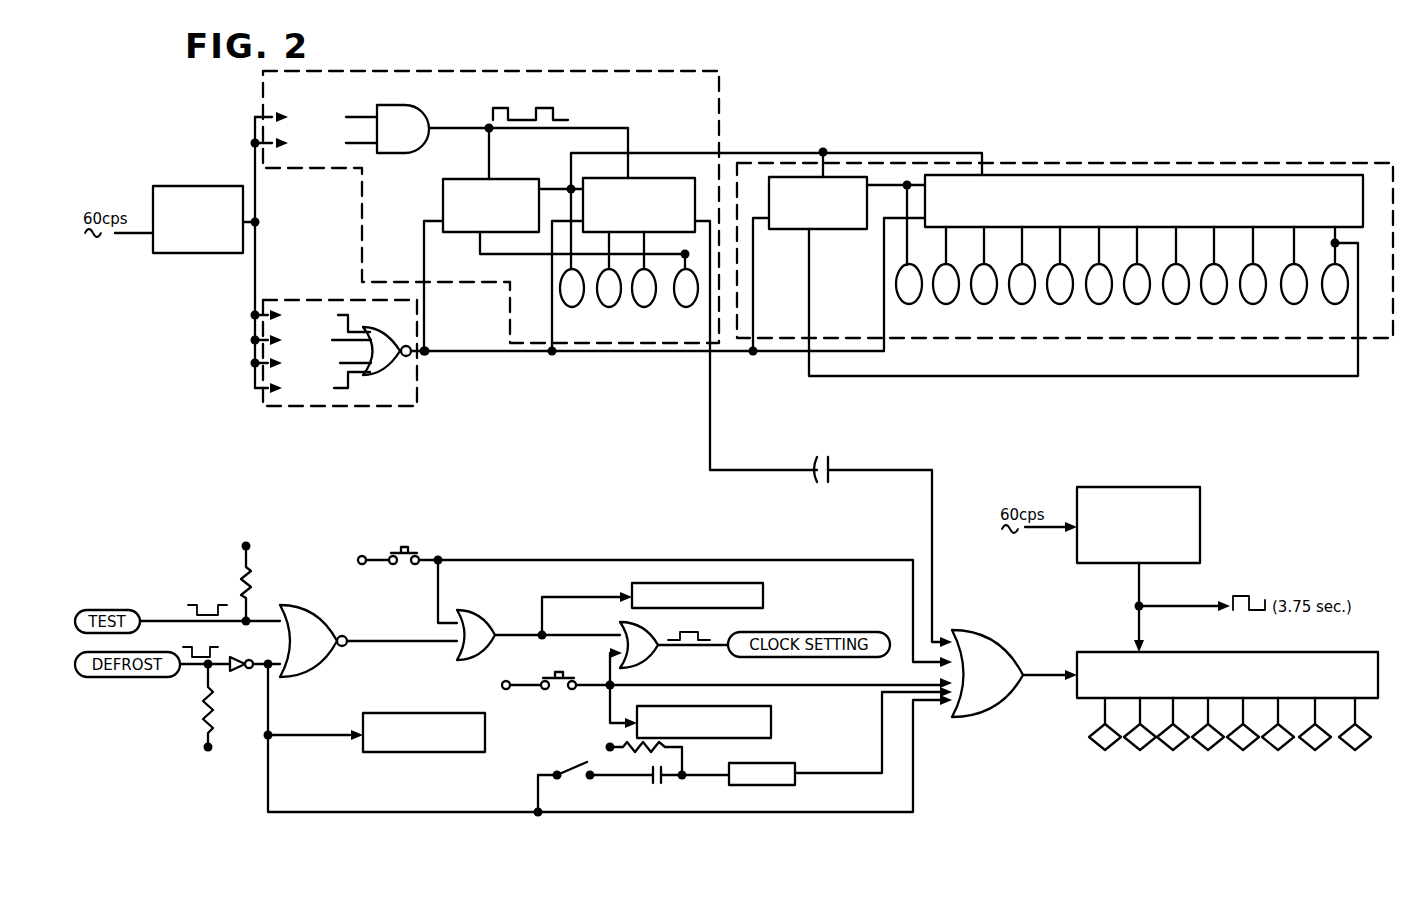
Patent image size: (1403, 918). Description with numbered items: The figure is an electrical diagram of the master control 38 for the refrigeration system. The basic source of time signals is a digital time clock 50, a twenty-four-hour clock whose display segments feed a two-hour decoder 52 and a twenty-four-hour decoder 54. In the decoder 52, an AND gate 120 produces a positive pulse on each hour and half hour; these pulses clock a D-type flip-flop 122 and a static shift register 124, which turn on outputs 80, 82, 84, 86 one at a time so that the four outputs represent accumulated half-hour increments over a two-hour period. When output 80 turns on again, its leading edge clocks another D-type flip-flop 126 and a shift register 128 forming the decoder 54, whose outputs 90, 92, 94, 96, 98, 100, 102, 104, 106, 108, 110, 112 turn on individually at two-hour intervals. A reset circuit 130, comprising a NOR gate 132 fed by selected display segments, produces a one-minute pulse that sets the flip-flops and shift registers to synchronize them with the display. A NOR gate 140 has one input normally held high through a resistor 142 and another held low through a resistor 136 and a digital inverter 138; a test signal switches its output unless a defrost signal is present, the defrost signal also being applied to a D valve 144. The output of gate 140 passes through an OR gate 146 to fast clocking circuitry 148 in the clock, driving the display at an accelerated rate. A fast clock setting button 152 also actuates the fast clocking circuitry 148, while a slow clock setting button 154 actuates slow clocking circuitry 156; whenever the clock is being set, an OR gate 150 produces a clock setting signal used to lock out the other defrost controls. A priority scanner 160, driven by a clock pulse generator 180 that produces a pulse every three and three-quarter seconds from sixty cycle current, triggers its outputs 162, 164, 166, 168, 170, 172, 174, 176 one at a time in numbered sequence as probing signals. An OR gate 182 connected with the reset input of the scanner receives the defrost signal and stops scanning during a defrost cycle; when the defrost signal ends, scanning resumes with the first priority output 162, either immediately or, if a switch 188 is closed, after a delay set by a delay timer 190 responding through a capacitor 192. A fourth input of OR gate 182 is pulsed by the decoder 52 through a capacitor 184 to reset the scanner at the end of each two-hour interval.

The master control 38 is at (841, 108).
The digital time clock 50 is at (222, 186).
The two-hour decoder 52 is at (495, 72).
The 24-hour decoder 54 is at (1012, 163).
The output 80 is at (562, 307).
The output 82 is at (600, 307).
The output 84 is at (636, 307).
The output 86 is at (680, 307).
The output 90 is at (918, 304).
The output 92 is at (945, 304).
The output 94 is at (978, 303).
The output 96 is at (1022, 304).
The output 98 is at (1050, 268).
The output 100 is at (1085, 305).
The output 102 is at (1127, 305).
The output 104 is at (1165, 305).
The output 106 is at (1205, 303).
The output 108 is at (1246, 304).
The output 110 is at (1286, 302).
The output 112 is at (1328, 303).
The AND gate 120 is at (402, 108).
The D-type flip-flop 122 is at (443, 197).
The static shift register 124 is at (647, 178).
The D-type flip-flop 126 is at (861, 229).
The shift register 128 is at (1168, 173).
The reset circuit 130 is at (400, 406).
The NOR gate 132 is at (408, 358).
The resistor 136 is at (205, 706).
The digital inverter 138 is at (249, 670).
The NOR gate 140 is at (306, 615).
The resistor 142 is at (240, 580).
The D valve 144 is at (485, 732).
The OR gate 146 is at (465, 610).
The fast clocking circuitry 148 is at (763, 600).
The OR gate 150 is at (652, 655).
The fast clock setting button 152 is at (406, 548).
The slow clock setting button 154 is at (558, 674).
The slow clocking circuitry 156 is at (771, 722).
The priority scanner 160 is at (1246, 652).
The first priority output 162 is at (1089, 735).
The second priority output 164 is at (1135, 750).
The priority output 166 is at (1168, 750).
The fourth priority output 168 is at (1202, 748).
The priority output 170 is at (1238, 750).
The priority output 172 is at (1275, 748).
The priority output 174 is at (1310, 750).
The priority output 176 is at (1348, 748).
The clock pulse generator 180 is at (1200, 492).
The OR gate 182 is at (965, 633).
The capacitor 184 is at (830, 462).
The switch 188 is at (576, 768).
The delay timer 190 is at (800, 786).
The capacitor 192 is at (662, 780).